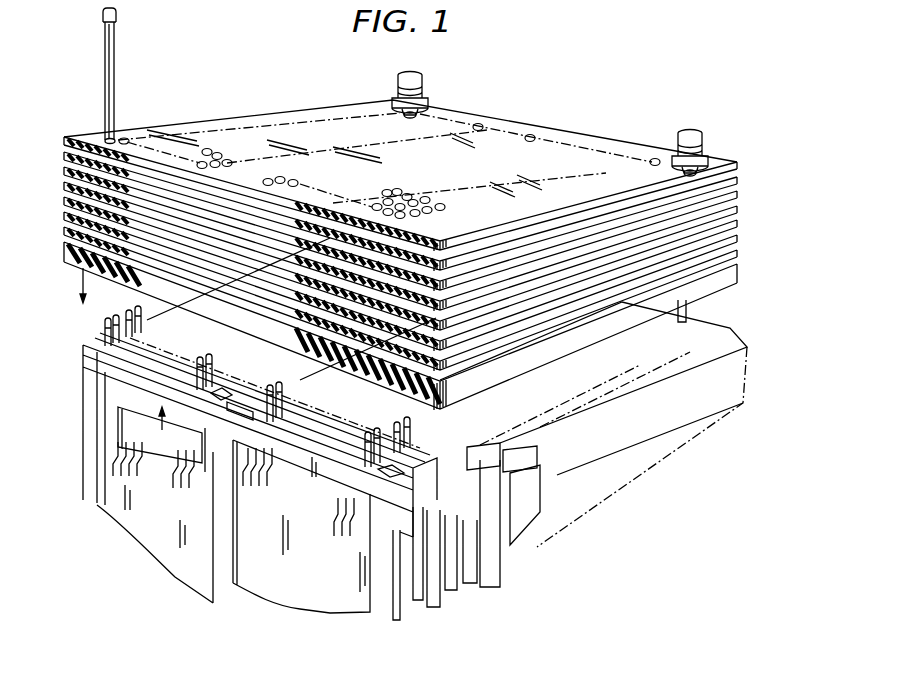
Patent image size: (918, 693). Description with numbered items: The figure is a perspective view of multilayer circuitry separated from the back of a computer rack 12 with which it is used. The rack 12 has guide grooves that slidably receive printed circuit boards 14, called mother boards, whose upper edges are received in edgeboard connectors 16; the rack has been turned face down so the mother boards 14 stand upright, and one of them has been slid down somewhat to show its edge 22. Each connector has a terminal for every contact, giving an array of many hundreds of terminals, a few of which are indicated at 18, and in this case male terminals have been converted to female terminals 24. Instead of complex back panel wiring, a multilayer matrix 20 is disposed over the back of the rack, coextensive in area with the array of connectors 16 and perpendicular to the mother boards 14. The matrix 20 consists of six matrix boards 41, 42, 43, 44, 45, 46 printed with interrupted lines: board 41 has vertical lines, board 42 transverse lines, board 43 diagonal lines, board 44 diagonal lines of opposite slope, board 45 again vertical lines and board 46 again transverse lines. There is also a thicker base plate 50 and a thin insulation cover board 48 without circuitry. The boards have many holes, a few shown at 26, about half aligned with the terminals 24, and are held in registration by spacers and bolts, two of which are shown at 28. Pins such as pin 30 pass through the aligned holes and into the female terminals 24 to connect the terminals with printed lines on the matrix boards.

The computer rack 12 is at (702, 451).
The printed circuit boards 14 is at (165, 555).
The edgeboard connectors 16 is at (84, 346).
The terminals 18 is at (100, 341).
The multilayer matrix 20 is at (592, 124).
The edge 22 is at (172, 441).
The female terminals 24 is at (110, 318).
The holes 26 is at (214, 160).
The bolts 28 is at (424, 82).
The pin 30 is at (119, 63).
The matrix board 41 is at (63, 230).
The matrix board 42 is at (63, 215).
The matrix board 43 is at (63, 200).
The matrix board 44 is at (63, 184).
The matrix board 45 is at (63, 169).
The matrix board 46 is at (63, 154).
The insulation cover board 48 is at (65, 138).
The base plate 50 is at (63, 248).